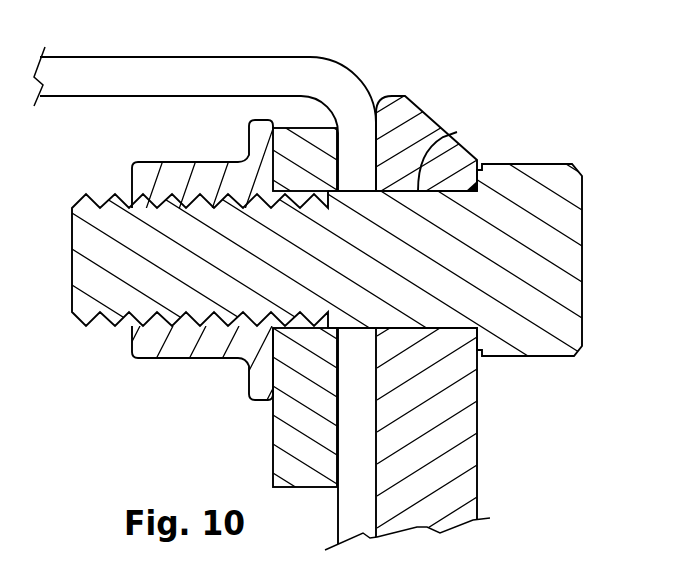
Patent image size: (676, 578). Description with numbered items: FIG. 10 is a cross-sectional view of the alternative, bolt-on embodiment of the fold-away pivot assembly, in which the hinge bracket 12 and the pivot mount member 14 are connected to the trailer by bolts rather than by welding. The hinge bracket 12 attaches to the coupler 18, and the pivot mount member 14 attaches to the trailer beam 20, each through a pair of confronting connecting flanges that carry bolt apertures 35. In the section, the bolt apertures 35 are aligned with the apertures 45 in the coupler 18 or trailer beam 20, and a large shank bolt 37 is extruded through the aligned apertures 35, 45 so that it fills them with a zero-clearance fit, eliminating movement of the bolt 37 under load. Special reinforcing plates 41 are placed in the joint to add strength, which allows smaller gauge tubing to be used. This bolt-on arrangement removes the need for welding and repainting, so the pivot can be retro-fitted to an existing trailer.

The hinge bracket 12 is at (457, 294).
The pivot mount member 14 is at (405, 92).
The coupler 18 is at (219, 102).
The trailer beam 20 is at (320, 82).
The bolt apertures 35 is at (454, 134).
The large shank bolts 37 is at (505, 155).
The reinforcing plates 41 is at (296, 122).
The apertures in the coupler or trailer beam 45 is at (360, 345).